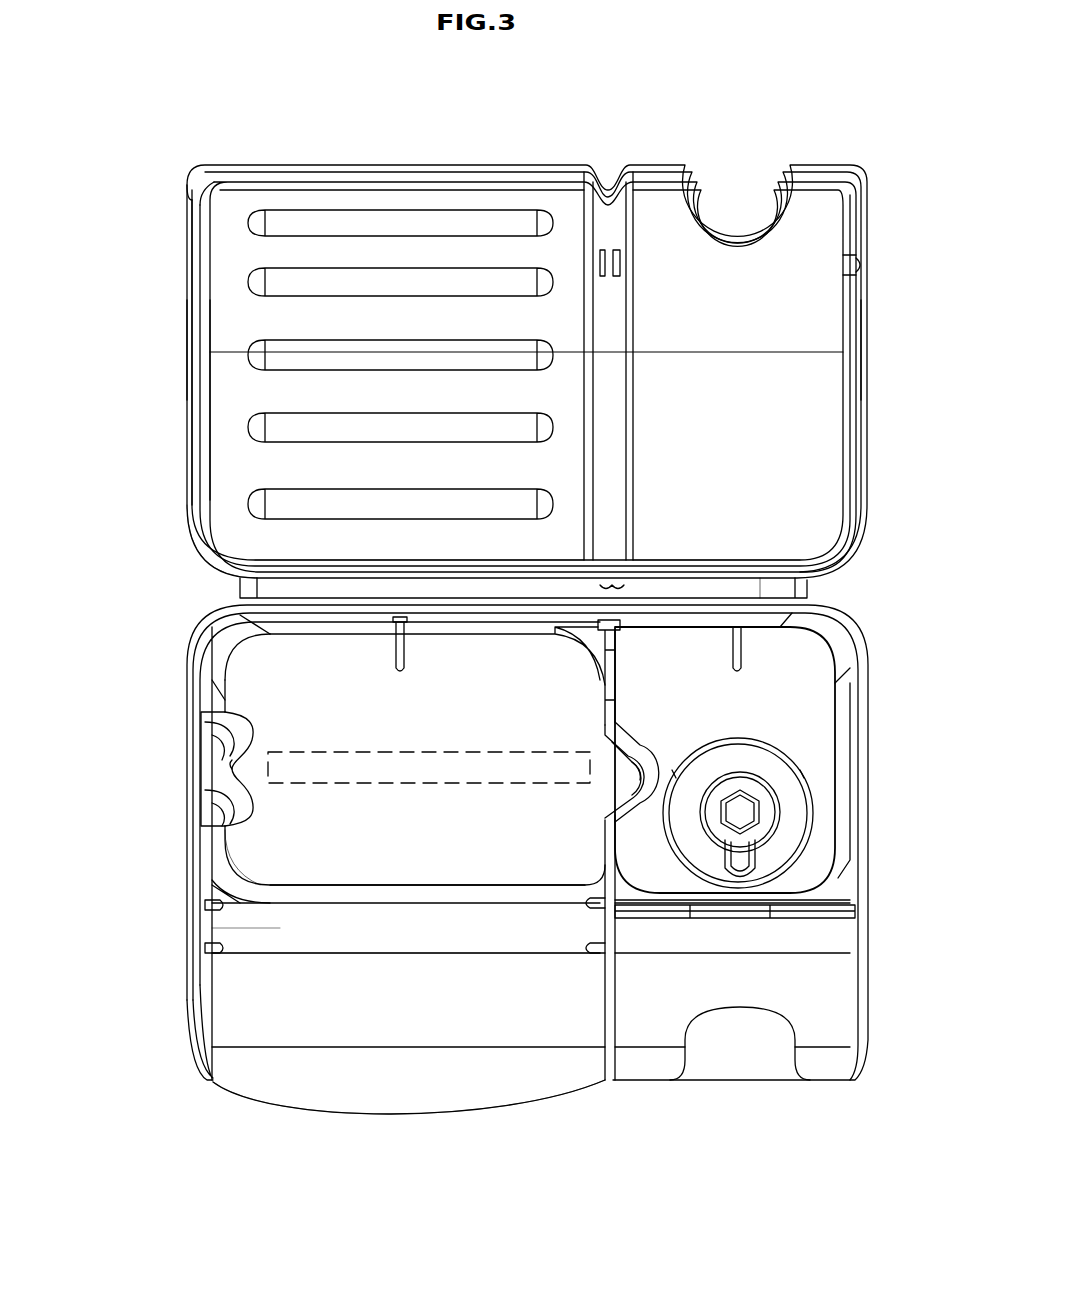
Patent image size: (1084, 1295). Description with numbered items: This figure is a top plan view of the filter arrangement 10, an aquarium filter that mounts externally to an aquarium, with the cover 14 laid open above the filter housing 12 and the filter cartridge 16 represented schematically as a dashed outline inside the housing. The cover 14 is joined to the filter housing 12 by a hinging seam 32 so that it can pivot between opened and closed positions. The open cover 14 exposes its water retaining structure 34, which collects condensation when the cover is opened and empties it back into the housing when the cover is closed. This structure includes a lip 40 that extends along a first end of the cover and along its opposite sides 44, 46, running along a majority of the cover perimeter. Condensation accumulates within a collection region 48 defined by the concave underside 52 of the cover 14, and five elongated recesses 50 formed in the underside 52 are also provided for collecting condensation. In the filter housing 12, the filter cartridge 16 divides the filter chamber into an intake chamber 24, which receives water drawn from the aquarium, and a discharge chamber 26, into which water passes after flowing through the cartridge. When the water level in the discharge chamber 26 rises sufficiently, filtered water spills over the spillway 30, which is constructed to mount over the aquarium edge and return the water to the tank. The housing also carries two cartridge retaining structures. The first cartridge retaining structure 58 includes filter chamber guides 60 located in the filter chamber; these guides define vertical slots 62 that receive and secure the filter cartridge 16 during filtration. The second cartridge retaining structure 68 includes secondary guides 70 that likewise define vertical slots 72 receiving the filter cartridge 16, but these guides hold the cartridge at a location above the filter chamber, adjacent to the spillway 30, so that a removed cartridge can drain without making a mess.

The filter arrangement 10 is at (241, 142).
The filter housing 12 is at (868, 765).
The cover 14 is at (866, 290).
The filter cartridge 16 is at (440, 752).
The intake chamber 24 is at (378, 709).
The discharge chamber 26 is at (396, 849).
The spillway 30 is at (328, 1030).
The hinging seam 32 is at (755, 587).
The water retaining structure 34 is at (200, 550).
The lip 40 is at (205, 436).
The side of the cover 44 is at (190, 365).
The side of the cover 46 is at (868, 390).
The collection region 48 is at (456, 482).
The recesses 50 is at (288, 283).
The concave underside 52 is at (560, 406).
The first cartridge retaining structure 58 is at (252, 815).
The filter chamber guides 60 is at (230, 795).
The vertical slots 62 is at (232, 760).
The second cartridge retaining structure 68 is at (226, 962).
The secondary guides 70 is at (207, 948).
The vertical slots 72 is at (215, 928).